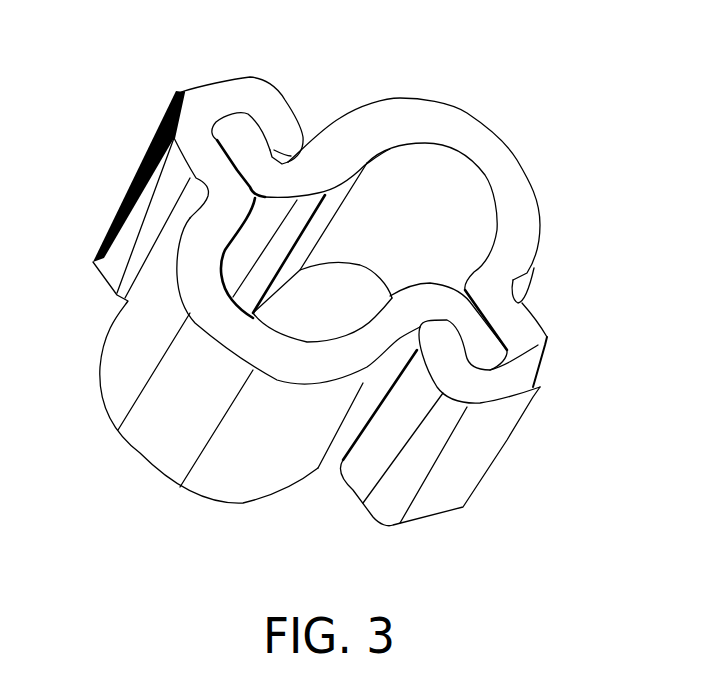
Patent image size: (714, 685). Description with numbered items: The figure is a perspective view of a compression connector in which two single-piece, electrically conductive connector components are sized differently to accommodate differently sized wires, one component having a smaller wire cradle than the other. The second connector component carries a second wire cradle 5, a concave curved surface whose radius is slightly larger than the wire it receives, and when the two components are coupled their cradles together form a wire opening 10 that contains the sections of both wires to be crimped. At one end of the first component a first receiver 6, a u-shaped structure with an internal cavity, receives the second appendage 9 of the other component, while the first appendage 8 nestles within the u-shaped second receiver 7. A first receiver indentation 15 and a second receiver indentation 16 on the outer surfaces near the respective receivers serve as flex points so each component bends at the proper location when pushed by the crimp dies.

The second wire cradle 5 is at (447, 216).
The first receiver 6 is at (245, 97).
The second receiver 7 is at (490, 387).
The first appendage 8 is at (490, 350).
The second appendage 9 is at (248, 125).
The wire opening 10 is at (337, 307).
The first receiver indentation 15 is at (120, 302).
The second receiver indentation 16 is at (521, 289).